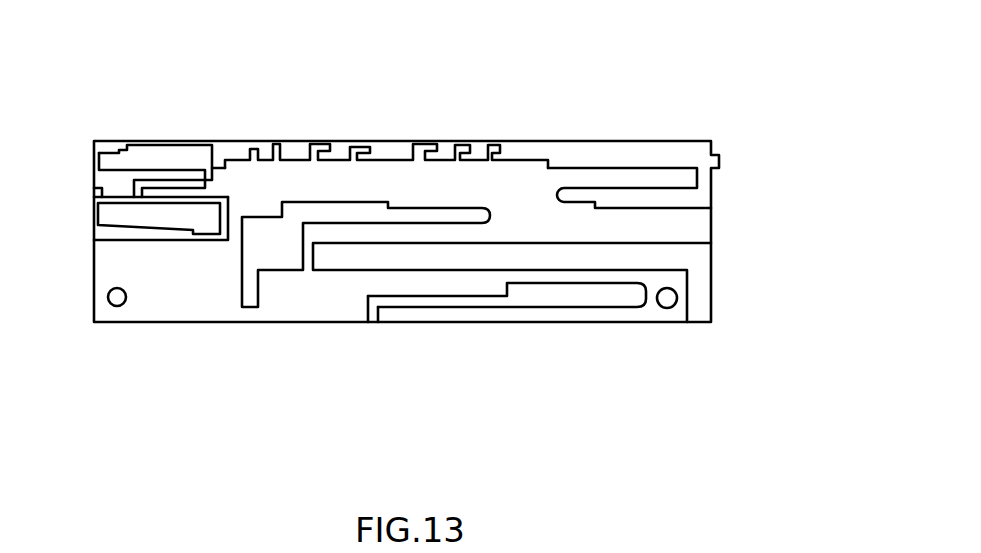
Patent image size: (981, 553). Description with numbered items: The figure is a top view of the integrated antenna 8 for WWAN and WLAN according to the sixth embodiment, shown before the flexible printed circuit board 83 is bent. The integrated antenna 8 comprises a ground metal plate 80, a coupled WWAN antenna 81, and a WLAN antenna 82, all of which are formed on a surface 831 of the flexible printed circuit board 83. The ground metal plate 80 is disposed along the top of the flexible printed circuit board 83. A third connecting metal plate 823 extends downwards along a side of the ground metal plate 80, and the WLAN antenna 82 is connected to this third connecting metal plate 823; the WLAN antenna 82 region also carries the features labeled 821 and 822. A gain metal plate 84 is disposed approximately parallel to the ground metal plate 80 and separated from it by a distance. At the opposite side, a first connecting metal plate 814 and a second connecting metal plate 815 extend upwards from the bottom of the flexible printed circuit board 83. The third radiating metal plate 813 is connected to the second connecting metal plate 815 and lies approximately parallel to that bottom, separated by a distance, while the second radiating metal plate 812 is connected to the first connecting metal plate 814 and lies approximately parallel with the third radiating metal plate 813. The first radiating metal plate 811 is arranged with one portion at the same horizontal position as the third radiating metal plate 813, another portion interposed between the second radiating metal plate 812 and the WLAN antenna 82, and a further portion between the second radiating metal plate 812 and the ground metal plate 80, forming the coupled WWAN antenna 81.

The integrated antenna 8 is at (723, 131).
The ground metal plate 80 is at (615, 157).
The coupled WWAN antenna 81 is at (512, 352).
The first radiating metal plate 811 is at (285, 247).
The second radiating metal plate 812 is at (437, 255).
The third radiating metal plate 813 is at (583, 290).
The first connecting metal plate 814 is at (700, 292).
The second connecting metal plate 815 is at (362, 311).
The WLAN antenna 82 is at (102, 130).
The feeding pad 821 is at (116, 200).
The connecting line 822 is at (183, 198).
The third connecting metal plate 823 is at (198, 172).
The flexible printed circuit board 83 is at (95, 332).
The surface 831 is at (152, 300).
The gain metal plate 84 is at (667, 196).